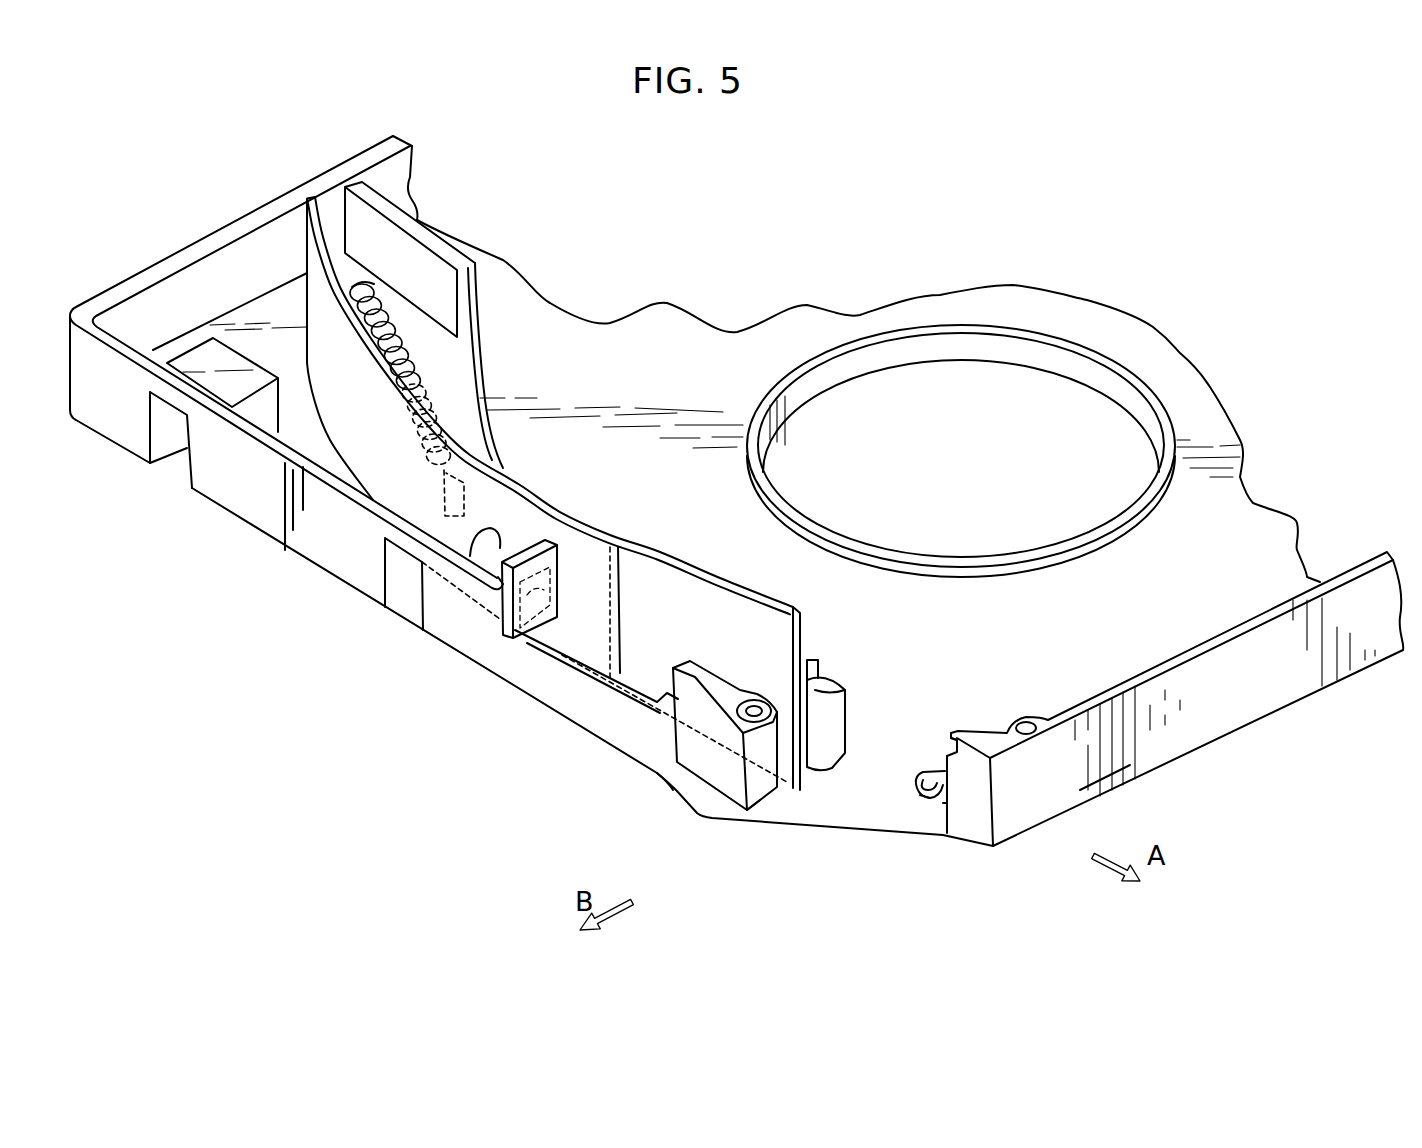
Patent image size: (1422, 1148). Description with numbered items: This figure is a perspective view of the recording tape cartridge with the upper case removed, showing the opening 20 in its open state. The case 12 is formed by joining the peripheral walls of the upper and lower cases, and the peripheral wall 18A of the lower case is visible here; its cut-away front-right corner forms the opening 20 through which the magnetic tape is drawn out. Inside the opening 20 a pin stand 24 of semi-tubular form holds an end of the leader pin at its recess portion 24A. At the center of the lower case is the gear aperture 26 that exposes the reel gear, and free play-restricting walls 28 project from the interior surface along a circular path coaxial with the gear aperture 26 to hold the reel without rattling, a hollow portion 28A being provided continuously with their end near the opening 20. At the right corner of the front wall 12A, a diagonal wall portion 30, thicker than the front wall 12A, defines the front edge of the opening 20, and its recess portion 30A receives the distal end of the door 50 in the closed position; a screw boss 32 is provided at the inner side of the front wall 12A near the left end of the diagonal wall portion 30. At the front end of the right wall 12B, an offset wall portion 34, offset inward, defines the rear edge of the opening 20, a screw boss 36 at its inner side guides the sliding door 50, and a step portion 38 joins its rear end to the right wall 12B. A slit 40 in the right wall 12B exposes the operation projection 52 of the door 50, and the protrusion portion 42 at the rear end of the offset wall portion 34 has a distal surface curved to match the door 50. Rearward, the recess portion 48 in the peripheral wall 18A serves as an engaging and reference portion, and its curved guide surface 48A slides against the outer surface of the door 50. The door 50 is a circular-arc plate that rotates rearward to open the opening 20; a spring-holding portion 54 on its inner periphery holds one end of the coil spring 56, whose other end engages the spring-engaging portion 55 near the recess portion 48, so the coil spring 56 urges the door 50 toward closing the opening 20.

The case 12 is at (1207, 759).
The front wall 12A is at (1260, 703).
The right wall 12B is at (237, 503).
The peripheral wall 18A is at (250, 216).
The opening 20 is at (943, 803).
The pin stand 24 is at (928, 771).
The recess portion 24A is at (922, 798).
The gear aperture 26 is at (973, 466).
The free play-restricting wall 28 is at (474, 387).
The hollow portion 28A is at (832, 683).
The diagonal wall portion 30 is at (980, 830).
The recess portion 30A is at (955, 775).
The screw boss 32 is at (1015, 720).
The offset wall portion 34 is at (712, 773).
The screw boss 36 is at (760, 767).
The step portion 38 is at (663, 772).
The slit 40 is at (582, 643).
The protrusion portion 42 is at (685, 668).
The recess portion 48 is at (410, 613).
The guide surface 48A is at (492, 560).
The door 50 is at (653, 538).
The operation projection 52 is at (553, 557).
The spring-holding portion 54 is at (372, 278).
The spring-engaging portion 55 is at (466, 486).
The coil spring 56 is at (408, 345).